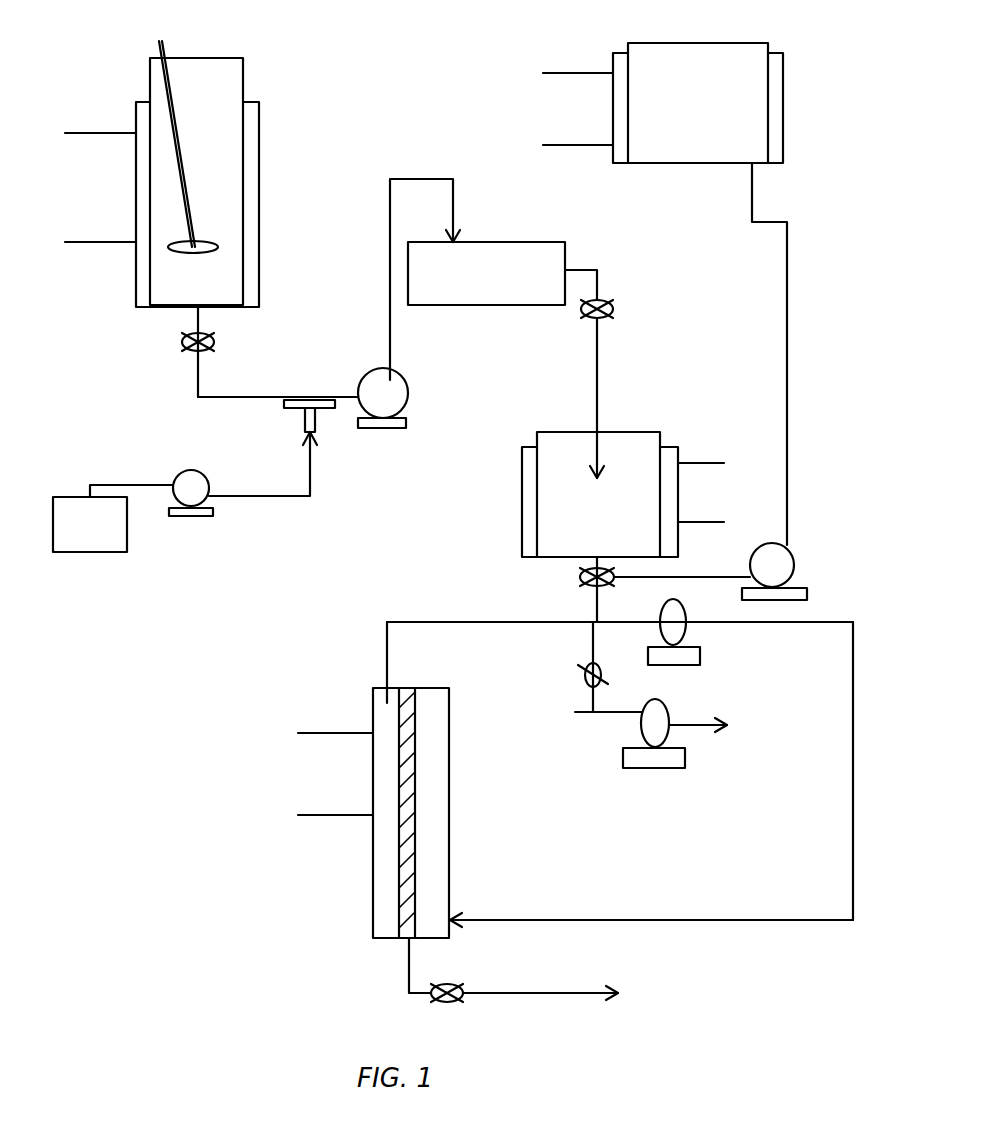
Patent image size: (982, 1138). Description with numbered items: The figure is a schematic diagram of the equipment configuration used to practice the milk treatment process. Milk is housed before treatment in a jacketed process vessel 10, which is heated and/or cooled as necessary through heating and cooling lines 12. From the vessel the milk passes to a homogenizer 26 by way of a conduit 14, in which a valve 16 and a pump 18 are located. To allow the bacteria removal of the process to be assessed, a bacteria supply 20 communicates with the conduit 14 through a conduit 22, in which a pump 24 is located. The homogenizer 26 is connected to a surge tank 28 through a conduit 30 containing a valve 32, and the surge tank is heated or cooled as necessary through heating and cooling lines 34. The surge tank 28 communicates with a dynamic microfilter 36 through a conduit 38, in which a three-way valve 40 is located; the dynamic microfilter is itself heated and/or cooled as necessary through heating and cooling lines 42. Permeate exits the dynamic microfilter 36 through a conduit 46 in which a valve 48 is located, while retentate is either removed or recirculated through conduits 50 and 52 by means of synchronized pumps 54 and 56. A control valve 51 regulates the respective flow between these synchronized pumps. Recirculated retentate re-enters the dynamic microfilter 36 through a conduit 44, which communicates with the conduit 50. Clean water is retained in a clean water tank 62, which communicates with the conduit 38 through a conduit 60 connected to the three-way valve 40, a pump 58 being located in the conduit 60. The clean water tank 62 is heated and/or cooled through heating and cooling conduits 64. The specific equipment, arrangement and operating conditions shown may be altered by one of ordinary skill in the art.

The jacketed process vessel 10 is at (243, 70).
The heating and cooling lines 12 is at (98, 242).
The conduit 14 is at (197, 383).
The valve 16 is at (214, 342).
The pump 18 is at (408, 390).
The bacteria supply 20 is at (112, 552).
The conduit 22 is at (300, 497).
The pump 24 is at (213, 512).
The homogenizer 26 is at (515, 305).
The surge tank 28 is at (522, 473).
The conduit 30 is at (597, 377).
The valve 32 is at (613, 306).
The heating and cooling lines 34 is at (705, 463).
The dynamic microfilter 36 is at (373, 692).
The conduit 38 is at (438, 620).
The three-way valve 40 is at (580, 578).
The heating and cooling lines 42 is at (315, 815).
The conduit 44 is at (652, 918).
The conduit 46 is at (580, 990).
The valve 48 is at (463, 990).
The conduit 50 is at (832, 620).
The control valve 51 is at (578, 677).
The conduit 52 is at (707, 732).
The synchronized pump 54 is at (700, 655).
The synchronized pump 56 is at (642, 728).
The pump 58 is at (794, 560).
The conduit 60 is at (787, 323).
The clean water tank 62 is at (768, 43).
The heating and cooling conduits 64 is at (565, 145).